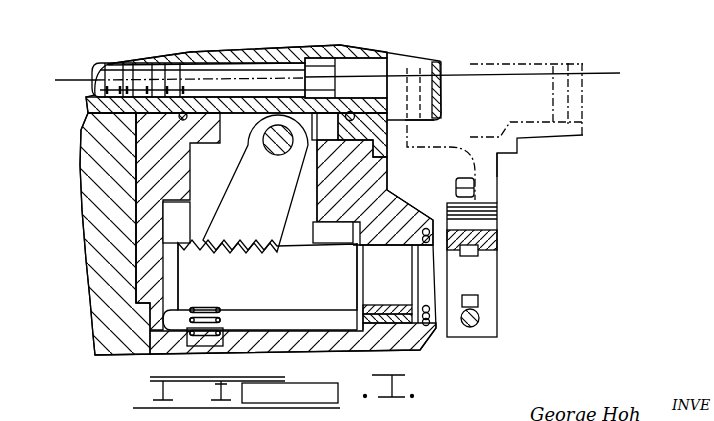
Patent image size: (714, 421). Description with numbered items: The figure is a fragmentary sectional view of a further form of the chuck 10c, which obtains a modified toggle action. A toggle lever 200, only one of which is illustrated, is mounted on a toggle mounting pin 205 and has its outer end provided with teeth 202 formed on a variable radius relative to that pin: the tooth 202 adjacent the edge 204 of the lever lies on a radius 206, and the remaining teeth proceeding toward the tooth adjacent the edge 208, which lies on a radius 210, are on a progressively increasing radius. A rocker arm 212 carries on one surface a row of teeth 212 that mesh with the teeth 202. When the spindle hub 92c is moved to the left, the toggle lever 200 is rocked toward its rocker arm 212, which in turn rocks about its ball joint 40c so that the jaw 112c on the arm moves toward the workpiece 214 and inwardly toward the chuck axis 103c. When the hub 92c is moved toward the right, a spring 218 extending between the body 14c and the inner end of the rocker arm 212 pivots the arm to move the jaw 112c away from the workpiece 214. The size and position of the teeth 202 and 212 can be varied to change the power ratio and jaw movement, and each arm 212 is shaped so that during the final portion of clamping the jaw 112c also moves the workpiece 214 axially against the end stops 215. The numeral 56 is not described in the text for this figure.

The chuck 10c is at (468, 30).
The body 14c is at (283, 340).
The spindle hub 92c is at (218, 60).
The chuck axis 103c is at (70, 80).
The toggle mounting pin 205 is at (322, 95).
The workpiece 214 is at (586, 130).
The radius 210 is at (225, 165).
The edge 208 is at (180, 212).
The edge 204 is at (313, 214).
The radius 206 is at (223, 223).
The toggle lever 200 is at (279, 255).
The teeth 202 is at (230, 258).
The rocker arm 212 is at (197, 260).
The spring 218 is at (205, 350).
The ball joint 40c is at (398, 222).
The bore 56 is at (430, 258).
The end stops 215 is at (477, 188).
The jaw 112c is at (497, 223).